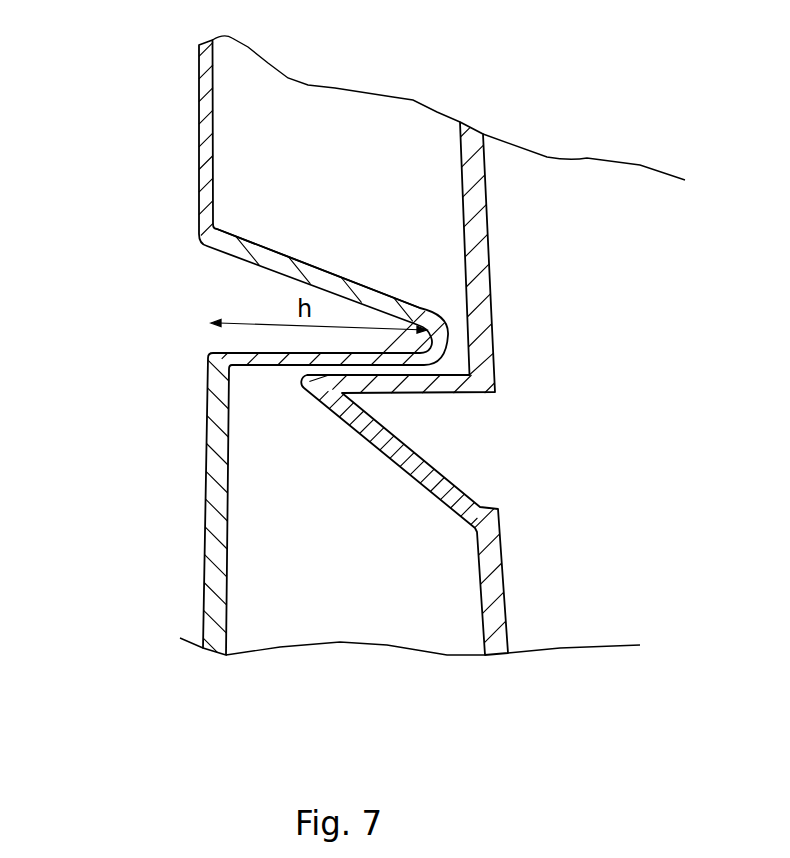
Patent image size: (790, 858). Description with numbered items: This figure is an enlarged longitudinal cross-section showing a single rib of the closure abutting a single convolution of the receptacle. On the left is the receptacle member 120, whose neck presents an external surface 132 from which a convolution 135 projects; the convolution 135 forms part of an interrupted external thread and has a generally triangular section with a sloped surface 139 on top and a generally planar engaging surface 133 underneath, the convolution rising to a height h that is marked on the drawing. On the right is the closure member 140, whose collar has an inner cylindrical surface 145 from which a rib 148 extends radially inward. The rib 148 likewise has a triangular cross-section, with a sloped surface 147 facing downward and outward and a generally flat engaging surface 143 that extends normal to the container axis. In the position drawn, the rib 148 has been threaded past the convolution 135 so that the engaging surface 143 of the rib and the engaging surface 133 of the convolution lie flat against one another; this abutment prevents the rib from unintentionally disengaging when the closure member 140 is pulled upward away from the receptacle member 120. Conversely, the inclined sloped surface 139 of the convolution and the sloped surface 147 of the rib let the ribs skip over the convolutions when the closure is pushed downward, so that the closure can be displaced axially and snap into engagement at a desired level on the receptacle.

The receptacle member 120 is at (190, 120).
The external surface 132 is at (213, 100).
The sloped surface 139 is at (275, 251).
The convolution 135 is at (336, 258).
The engaging surface 133 is at (258, 366).
The engaging surface 143 is at (436, 374).
The inner cylindrical surface 145 is at (461, 175).
The closure member 140 is at (521, 295).
The rib 148 is at (375, 459).
The sloped surface 147 is at (420, 484).